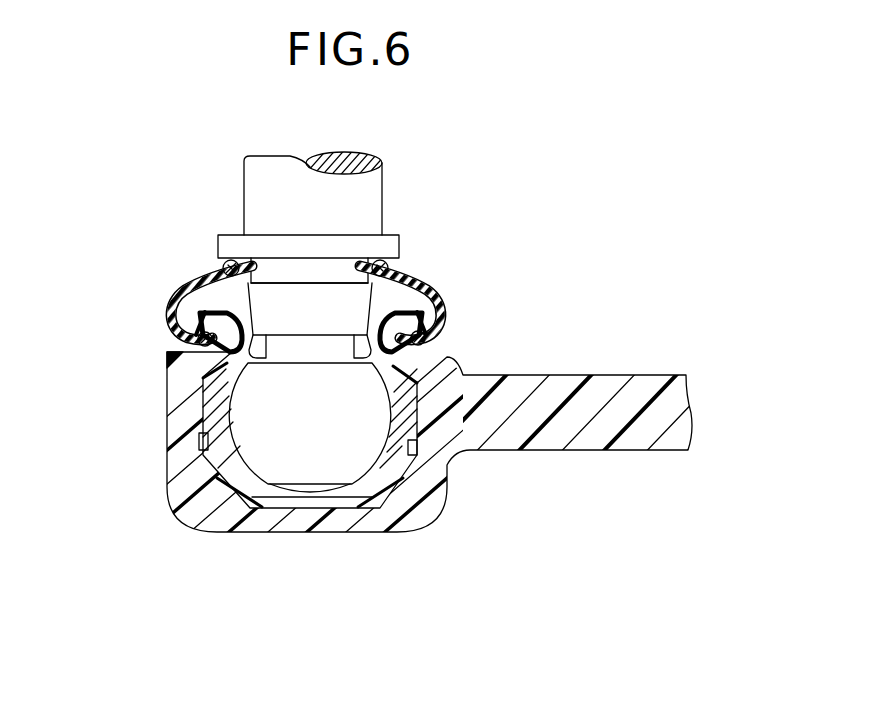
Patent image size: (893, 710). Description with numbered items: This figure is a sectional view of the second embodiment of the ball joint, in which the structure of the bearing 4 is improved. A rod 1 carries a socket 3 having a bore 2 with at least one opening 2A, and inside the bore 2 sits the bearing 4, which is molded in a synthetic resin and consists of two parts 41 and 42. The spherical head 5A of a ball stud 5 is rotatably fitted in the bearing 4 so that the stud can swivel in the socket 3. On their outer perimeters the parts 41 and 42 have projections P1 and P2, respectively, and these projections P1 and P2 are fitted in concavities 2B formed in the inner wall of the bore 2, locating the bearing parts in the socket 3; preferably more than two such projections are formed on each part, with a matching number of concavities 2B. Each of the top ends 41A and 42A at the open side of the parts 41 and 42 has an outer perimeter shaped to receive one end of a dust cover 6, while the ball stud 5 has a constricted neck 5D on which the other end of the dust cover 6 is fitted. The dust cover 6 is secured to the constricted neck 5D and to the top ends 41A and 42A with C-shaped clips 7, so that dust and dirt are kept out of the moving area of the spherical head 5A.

The rod 1 is at (641, 437).
The bore 2 is at (307, 407).
The opening 2A is at (405, 285).
The concavities 2B is at (205, 440).
The socket 3 is at (192, 498).
The bearing 4 is at (310, 522).
The part of the bearing 41 is at (282, 503).
The top end of part 41 41A is at (170, 305).
The part of the bearing 42 is at (320, 503).
The top end of part 42 42A is at (440, 290).
The ball stud 5 is at (318, 351).
The spherical head 5A is at (347, 440).
The constricted neck 5D is at (307, 268).
The dust cover 6 is at (447, 317).
The C-shaped clips 7 is at (220, 265).
The projections P1 is at (210, 405).
The projections P2 is at (445, 440).